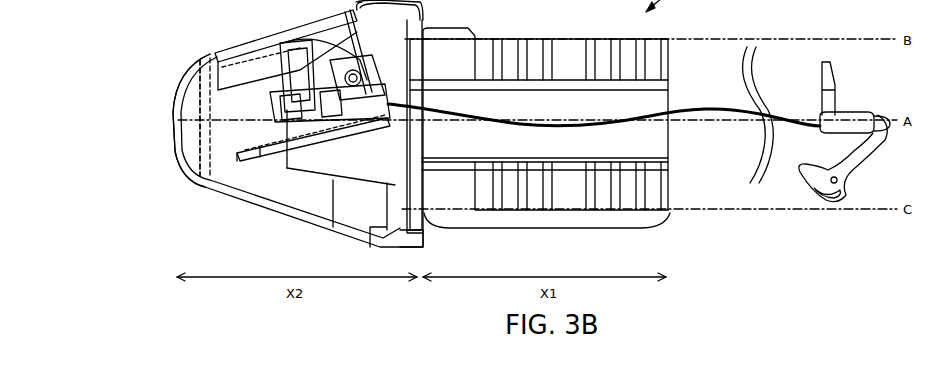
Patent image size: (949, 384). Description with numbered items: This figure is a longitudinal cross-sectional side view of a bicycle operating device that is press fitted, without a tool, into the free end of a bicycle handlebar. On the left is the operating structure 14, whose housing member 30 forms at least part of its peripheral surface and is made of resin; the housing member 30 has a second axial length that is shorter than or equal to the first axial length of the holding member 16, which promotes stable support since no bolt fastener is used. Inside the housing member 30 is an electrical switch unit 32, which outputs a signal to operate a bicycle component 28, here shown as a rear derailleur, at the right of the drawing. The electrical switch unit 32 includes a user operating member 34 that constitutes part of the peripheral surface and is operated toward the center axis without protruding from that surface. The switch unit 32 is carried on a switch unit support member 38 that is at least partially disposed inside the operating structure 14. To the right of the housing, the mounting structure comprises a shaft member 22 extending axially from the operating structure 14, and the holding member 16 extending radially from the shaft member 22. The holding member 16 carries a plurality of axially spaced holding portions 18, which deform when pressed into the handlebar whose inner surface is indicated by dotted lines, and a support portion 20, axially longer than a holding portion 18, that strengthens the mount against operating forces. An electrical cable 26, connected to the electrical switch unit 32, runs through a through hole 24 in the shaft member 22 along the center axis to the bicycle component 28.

The operating structure 14 is at (180, 31).
The holding member 16 is at (549, 228).
The holding portions 18 is at (617, 37).
The support portion 20 is at (450, 28).
The shaft member 22 is at (650, 85).
The through hole 24 is at (647, 133).
The electrical cable 26 is at (567, 124).
The bicycle component 28 is at (863, 162).
The housing member 30 is at (281, 217).
The electrical switch unit 32 is at (231, 117).
The user operating member 34 is at (248, 40).
The switch unit support member 38 is at (282, 160).